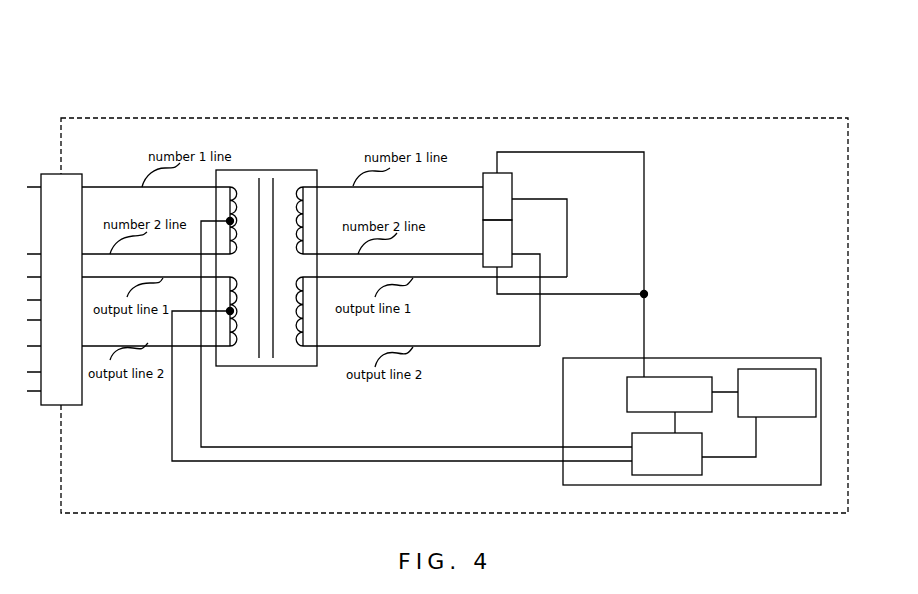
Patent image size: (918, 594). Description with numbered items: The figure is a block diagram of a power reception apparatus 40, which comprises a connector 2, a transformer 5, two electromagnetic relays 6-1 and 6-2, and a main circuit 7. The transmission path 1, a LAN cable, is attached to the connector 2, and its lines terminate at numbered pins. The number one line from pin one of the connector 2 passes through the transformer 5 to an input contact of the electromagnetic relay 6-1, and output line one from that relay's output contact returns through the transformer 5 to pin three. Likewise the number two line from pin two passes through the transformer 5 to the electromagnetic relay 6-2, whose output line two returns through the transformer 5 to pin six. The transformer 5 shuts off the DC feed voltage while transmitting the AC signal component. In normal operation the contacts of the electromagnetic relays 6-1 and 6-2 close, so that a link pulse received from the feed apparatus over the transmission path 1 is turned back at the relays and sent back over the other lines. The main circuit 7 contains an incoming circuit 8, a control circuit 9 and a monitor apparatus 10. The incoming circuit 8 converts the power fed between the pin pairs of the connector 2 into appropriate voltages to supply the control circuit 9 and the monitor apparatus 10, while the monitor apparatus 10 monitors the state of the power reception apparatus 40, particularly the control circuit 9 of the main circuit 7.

The transmission path 1 is at (32, 185).
The connector 2 is at (72, 175).
The transformer 5 is at (290, 175).
The electromagnetic relay 6-1 is at (505, 198).
The electromagnetic relay 6-2 is at (505, 247).
The main circuit 7 is at (717, 358).
The incoming circuit 8 is at (697, 443).
The control circuit 9 is at (765, 415).
The monitor apparatus 10 is at (627, 395).
The power reception apparatus 40 is at (435, 117).